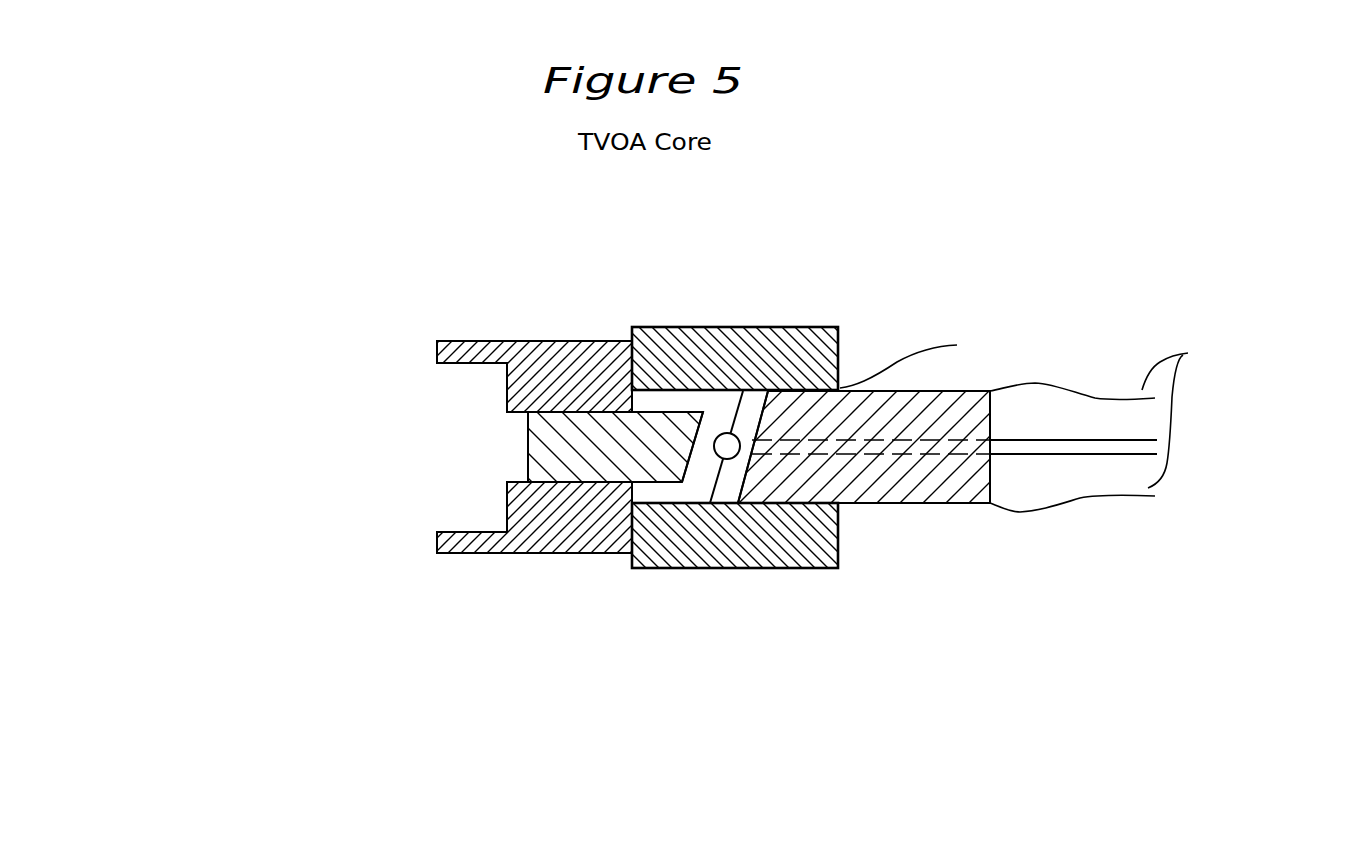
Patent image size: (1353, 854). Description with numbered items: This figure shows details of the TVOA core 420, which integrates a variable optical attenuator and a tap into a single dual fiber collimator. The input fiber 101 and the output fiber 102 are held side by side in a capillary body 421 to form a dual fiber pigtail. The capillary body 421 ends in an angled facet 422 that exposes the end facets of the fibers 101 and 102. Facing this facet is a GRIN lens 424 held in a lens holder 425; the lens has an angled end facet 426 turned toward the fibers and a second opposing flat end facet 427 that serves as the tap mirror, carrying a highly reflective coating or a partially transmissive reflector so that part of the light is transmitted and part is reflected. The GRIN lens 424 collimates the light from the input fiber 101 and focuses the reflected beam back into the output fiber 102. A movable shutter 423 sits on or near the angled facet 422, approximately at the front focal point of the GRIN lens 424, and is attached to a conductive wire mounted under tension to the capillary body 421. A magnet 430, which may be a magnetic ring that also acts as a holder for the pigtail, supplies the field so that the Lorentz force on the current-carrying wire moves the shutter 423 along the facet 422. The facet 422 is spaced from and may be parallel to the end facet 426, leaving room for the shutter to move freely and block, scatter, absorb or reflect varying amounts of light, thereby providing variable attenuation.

The TVOA core 420 is at (818, 292).
The lens holder 425 is at (452, 340).
The GRIN lens 424 is at (528, 428).
The flat end facet 427 is at (520, 447).
The angled end facet 426 is at (690, 445).
The angled facet 422 is at (730, 412).
The movable shutter 423 is at (720, 457).
The magnet 430 is at (720, 557).
The capillary body 421 is at (1024, 449).
The input fiber 101 is at (1019, 428).
The output fiber 102 is at (1017, 462).